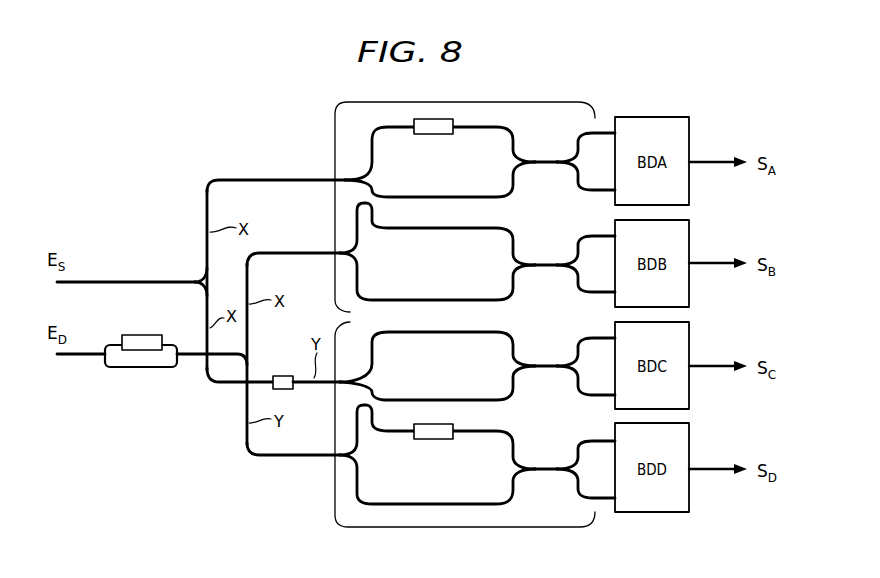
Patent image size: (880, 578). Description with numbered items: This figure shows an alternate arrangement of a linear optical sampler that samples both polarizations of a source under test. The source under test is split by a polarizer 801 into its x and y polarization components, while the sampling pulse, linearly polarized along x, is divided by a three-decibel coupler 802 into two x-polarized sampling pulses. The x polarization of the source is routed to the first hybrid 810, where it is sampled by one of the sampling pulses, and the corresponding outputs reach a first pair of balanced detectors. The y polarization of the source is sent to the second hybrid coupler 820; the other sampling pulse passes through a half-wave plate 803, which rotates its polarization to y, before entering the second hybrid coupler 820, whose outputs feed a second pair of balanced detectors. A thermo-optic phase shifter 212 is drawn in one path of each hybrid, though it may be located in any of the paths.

The polarizer 801 is at (143, 337).
The 3-dB coupler 802 is at (203, 278).
The half-wave plate 803 is at (281, 375).
The first hybrid 810 is at (333, 133).
The second hybrid coupler 820 is at (333, 497).
The thermo-optic phase shifter 212 is at (437, 134).